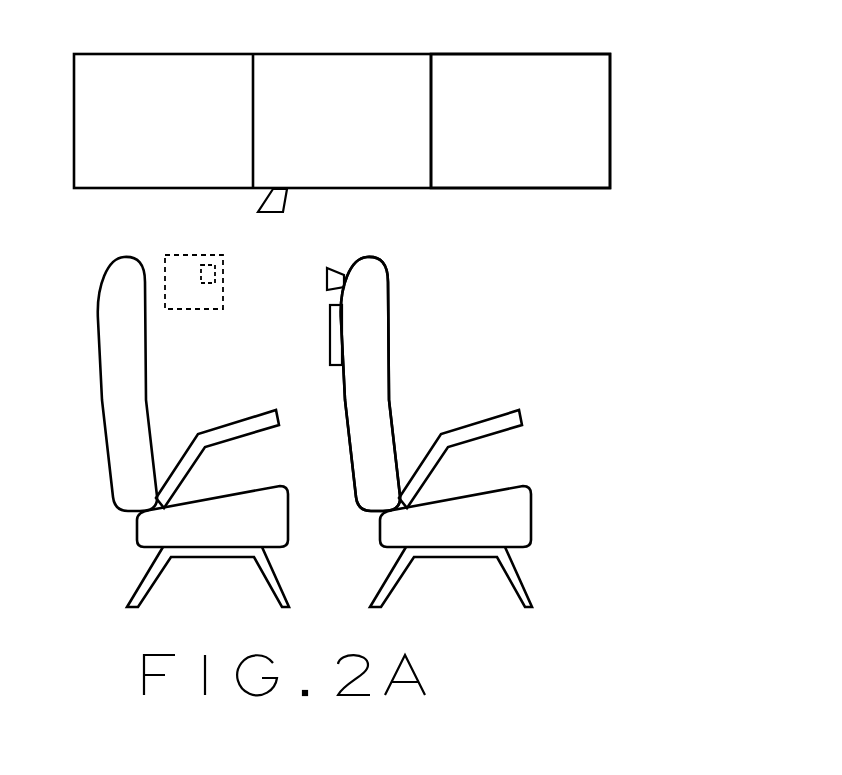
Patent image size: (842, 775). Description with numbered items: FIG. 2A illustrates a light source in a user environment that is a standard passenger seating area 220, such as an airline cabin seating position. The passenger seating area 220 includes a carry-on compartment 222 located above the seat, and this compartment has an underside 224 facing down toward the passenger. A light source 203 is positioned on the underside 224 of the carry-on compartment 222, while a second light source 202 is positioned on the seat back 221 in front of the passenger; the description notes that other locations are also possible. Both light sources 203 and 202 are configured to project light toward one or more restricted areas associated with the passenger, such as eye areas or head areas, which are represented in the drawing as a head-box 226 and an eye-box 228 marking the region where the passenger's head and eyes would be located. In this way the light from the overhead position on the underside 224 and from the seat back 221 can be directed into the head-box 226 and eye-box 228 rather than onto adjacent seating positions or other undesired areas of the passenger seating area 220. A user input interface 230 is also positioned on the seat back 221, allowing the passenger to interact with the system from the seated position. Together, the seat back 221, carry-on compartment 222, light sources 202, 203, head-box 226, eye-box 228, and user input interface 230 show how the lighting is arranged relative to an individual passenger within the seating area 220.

The light source 202 is at (338, 257).
The light source 203 is at (252, 200).
The passenger seating area 220 is at (513, 360).
The seat back 221 is at (334, 398).
The carry-on compartment 222 is at (622, 113).
The underside 224 is at (481, 193).
The head-box 226 is at (162, 254).
The eye-box 228 is at (209, 284).
The user input interface 230 is at (327, 326).